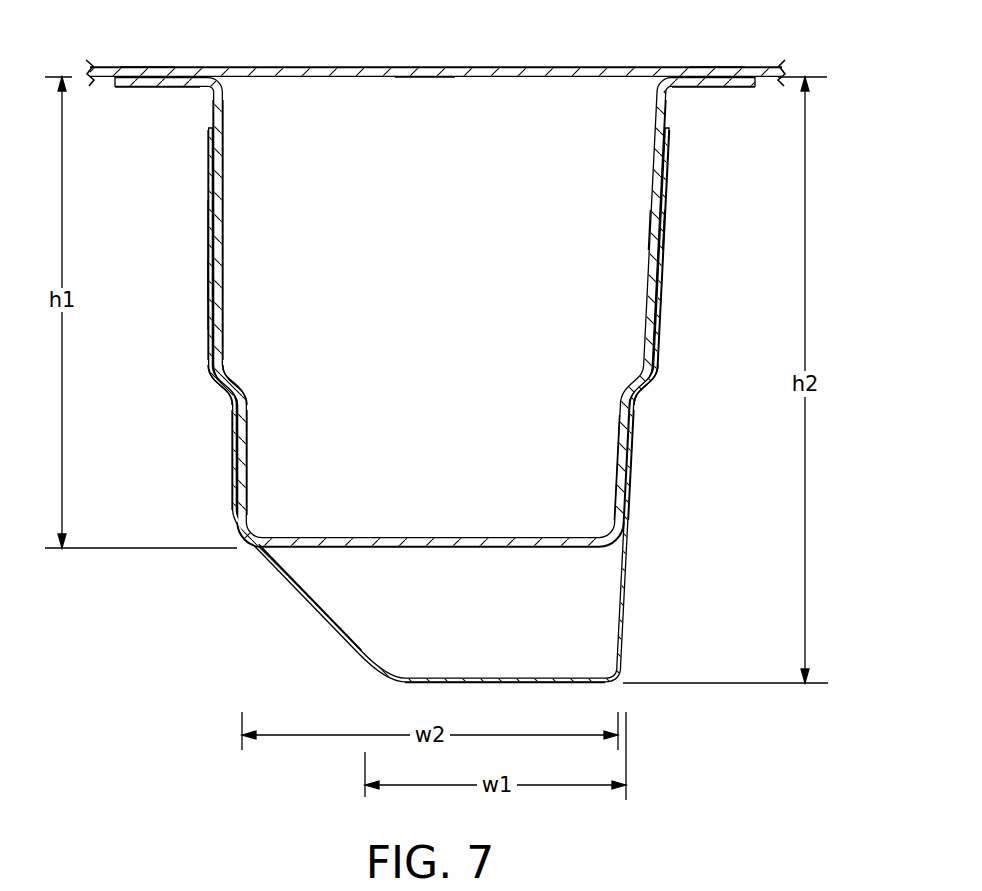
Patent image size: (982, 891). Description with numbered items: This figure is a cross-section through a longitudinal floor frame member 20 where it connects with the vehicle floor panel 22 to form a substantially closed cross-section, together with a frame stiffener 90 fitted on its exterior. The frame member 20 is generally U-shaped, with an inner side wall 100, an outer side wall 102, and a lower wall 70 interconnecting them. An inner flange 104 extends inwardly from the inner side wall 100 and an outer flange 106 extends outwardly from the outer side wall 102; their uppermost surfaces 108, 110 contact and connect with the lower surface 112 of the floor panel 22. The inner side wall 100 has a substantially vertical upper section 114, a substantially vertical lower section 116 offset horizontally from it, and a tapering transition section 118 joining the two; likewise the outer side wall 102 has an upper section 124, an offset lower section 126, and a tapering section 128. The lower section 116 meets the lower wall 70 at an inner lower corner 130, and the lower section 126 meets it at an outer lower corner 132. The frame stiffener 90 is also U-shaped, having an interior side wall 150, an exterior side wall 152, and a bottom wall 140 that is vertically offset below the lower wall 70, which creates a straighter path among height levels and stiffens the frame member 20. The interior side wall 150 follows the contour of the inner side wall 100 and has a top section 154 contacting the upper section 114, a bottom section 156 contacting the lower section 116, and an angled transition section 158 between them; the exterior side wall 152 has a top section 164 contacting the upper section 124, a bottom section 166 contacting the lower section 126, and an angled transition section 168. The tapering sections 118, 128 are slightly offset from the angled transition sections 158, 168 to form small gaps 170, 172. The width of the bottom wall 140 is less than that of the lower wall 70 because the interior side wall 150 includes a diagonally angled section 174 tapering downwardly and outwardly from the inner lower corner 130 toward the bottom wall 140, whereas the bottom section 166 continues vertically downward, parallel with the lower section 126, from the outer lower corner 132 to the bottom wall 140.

The longitudinal floor frame member 20 is at (218, 223).
The vehicle floor panel 22 is at (403, 72).
The lower wall 70 is at (413, 537).
The frame stiffener 90 is at (211, 230).
The inner side wall 100 is at (218, 277).
The outer side wall 102 is at (652, 235).
The inner flange 104 is at (154, 82).
The outer flange 106 is at (718, 82).
The uppermost surface of inner flange 108 is at (145, 72).
The uppermost surface of outer flange 110 is at (708, 72).
The lower surface of floor panel 112 is at (424, 80).
The upper section of inner side wall 114 is at (218, 176).
The lower section of inner side wall 116 is at (245, 453).
The tapering transition section 118 is at (231, 367).
The upper section of outer side wall 124 is at (657, 173).
The lower section of outer side wall 126 is at (620, 443).
The tapering section 128 is at (641, 362).
The inner lower corner 130 is at (256, 527).
The outer lower corner 132 is at (607, 530).
The bottom wall 140 is at (482, 678).
The interior side wall 150 is at (211, 282).
The exterior side wall 152 is at (664, 228).
The top section of interior side wall 154 is at (211, 170).
The bottom section of interior side wall 156 is at (233, 440).
The angled transition section 158 is at (215, 390).
The top section of exterior side wall 164 is at (665, 172).
The bottom section of exterior side wall 166 is at (633, 434).
The angled transition section 168 is at (645, 398).
The small gap 170 is at (243, 383).
The small gap 172 is at (638, 385).
The diagonally angled section 174 is at (300, 597).